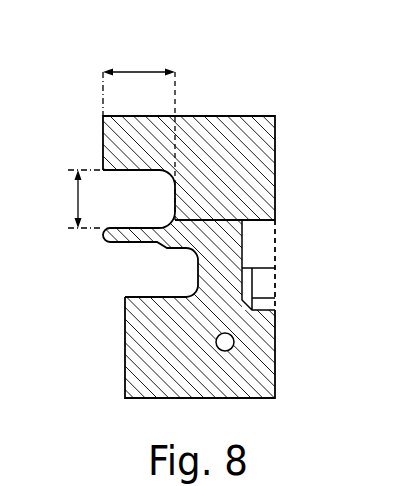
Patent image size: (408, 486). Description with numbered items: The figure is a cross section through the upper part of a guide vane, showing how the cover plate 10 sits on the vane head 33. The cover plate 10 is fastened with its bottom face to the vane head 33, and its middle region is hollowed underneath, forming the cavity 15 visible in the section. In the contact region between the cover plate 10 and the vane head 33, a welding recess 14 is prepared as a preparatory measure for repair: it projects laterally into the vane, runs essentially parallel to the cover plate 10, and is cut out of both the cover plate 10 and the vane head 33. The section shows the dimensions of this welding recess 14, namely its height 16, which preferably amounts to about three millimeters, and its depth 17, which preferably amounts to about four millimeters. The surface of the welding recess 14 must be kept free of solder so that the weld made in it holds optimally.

The cover plate 10 is at (232, 116).
The welding recess 14 is at (100, 205).
The cavity 15 is at (260, 282).
The height 16 is at (75, 202).
The depth 17 is at (139, 134).
The vane head 33 is at (137, 350).